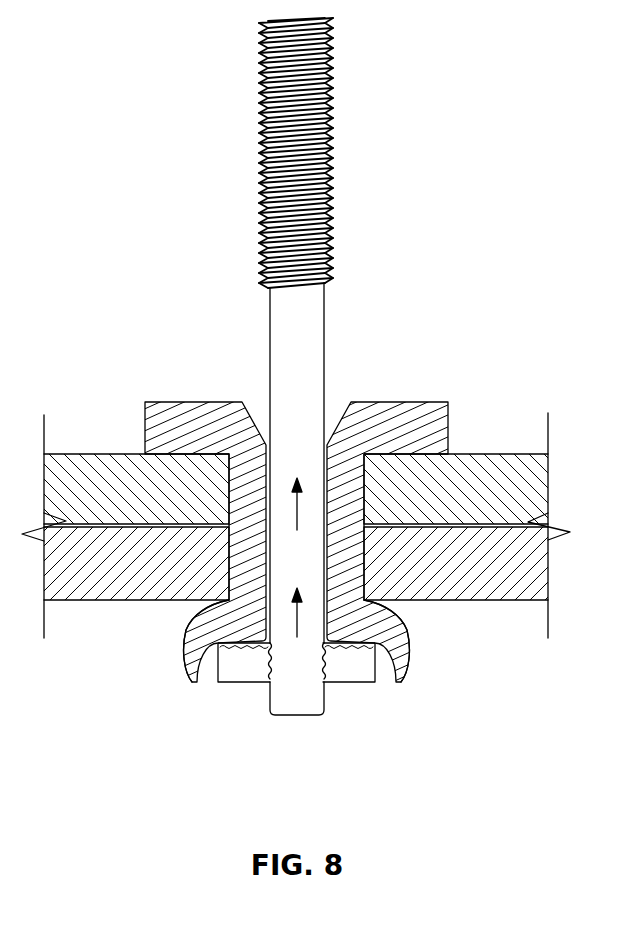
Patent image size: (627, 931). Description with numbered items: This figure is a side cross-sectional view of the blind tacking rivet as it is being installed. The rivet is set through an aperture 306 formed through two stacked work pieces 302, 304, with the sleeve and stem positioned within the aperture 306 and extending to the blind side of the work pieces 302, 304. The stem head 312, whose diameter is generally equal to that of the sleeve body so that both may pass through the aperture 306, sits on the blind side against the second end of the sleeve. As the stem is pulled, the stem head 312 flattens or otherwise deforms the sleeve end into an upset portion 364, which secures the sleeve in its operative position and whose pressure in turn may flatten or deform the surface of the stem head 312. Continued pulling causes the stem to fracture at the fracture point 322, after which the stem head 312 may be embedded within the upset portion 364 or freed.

The work piece 302 is at (537, 487).
The work piece 304 is at (533, 580).
The aperture 306 is at (228, 488).
The stem head 312 is at (357, 672).
The fracture point 322 is at (267, 685).
The upset portion 364 is at (192, 645).